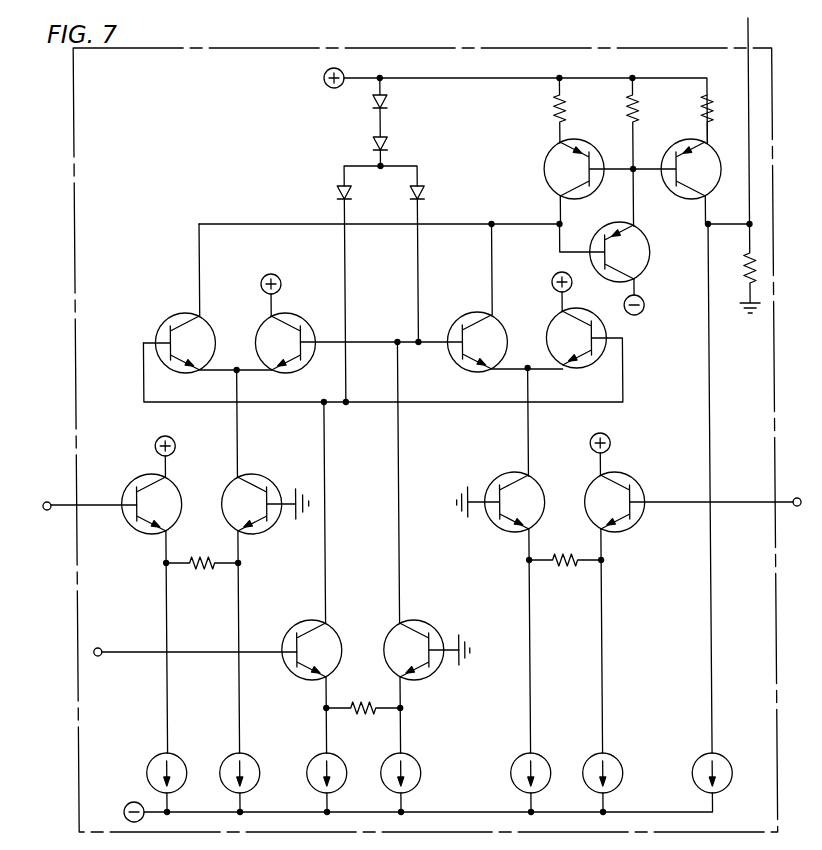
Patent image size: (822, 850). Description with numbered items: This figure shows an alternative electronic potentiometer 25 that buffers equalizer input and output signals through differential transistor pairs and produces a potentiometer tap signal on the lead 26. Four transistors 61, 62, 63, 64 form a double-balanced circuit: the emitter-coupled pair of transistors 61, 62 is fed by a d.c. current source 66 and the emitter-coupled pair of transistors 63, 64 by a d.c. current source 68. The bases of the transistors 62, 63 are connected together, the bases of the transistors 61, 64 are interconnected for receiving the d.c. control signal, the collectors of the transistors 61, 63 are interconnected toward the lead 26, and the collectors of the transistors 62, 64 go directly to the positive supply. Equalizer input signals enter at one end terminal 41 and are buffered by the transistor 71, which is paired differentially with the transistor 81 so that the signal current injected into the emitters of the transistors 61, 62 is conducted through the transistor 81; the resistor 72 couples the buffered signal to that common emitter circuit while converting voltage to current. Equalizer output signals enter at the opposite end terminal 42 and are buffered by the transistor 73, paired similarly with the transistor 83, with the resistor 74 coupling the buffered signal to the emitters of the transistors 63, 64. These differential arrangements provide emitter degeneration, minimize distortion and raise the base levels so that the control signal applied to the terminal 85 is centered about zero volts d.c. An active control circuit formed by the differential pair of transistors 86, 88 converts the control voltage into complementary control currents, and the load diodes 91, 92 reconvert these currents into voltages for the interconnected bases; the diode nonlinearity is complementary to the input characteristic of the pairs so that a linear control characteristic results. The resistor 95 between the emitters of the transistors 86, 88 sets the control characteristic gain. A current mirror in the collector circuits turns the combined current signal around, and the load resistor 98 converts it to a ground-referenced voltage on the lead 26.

The electronic potentiometer 25 is at (388, 48).
The lead 26 is at (749, 28).
The end terminal 41 is at (46, 511).
The opposite end terminal 42 is at (796, 507).
The transistor 61 is at (164, 322).
The transistor 62 is at (265, 322).
The transistor 63 is at (457, 321).
The transistor 64 is at (556, 318).
The d.c. current source 66 is at (253, 758).
The d.c. current source 68 is at (543, 758).
The transistor 71 is at (132, 482).
The resistor 72 is at (204, 569).
The transistor 73 is at (636, 480).
The resistor 74 is at (566, 566).
The transistor 81 is at (273, 482).
The transistor 83 is at (493, 480).
The terminal 85 is at (93, 672).
The transistor 86 is at (333, 628).
The transistor 88 is at (436, 628).
The load diode 91 is at (338, 195).
The load diode 92 is at (426, 195).
The resistor 95 is at (363, 711).
The load resistor 98 is at (740, 268).